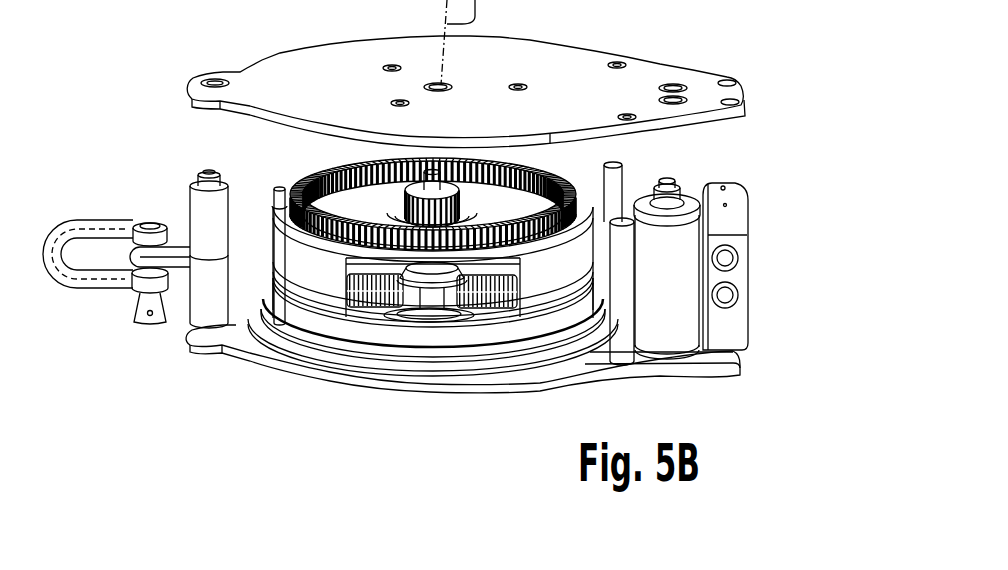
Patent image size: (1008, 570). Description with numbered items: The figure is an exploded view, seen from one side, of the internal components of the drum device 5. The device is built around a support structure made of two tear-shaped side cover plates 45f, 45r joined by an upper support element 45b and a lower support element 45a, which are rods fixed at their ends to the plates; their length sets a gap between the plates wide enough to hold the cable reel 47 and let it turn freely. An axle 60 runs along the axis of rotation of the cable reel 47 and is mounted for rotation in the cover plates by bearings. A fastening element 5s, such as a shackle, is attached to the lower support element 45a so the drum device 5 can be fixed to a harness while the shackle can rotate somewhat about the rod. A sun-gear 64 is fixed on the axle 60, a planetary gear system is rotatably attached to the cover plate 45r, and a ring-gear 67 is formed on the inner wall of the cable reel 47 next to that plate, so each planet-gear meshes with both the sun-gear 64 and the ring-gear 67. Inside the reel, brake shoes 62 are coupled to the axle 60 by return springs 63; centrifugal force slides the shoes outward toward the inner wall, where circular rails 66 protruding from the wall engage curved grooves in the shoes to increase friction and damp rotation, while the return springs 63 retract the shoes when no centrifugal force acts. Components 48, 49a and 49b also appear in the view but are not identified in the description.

The drum device 5 is at (289, 21).
The fastening element 5s is at (77, 228).
The lower support element 45a is at (197, 208).
The upper support element 45b is at (618, 217).
The side cover plate 45f is at (318, 378).
The side cover plate 45r is at (540, 67).
The cable reel 47 is at (279, 208).
The connector block 48 is at (730, 197).
The knob 49a is at (661, 180).
The cylinder 49b is at (683, 230).
The axle 60 is at (436, 300).
The brake shoe 62 is at (297, 307).
The return spring 63 is at (373, 300).
The sun-gear 64 is at (410, 197).
The circular rail 66 is at (277, 268).
The ring-gear 67 is at (297, 176).